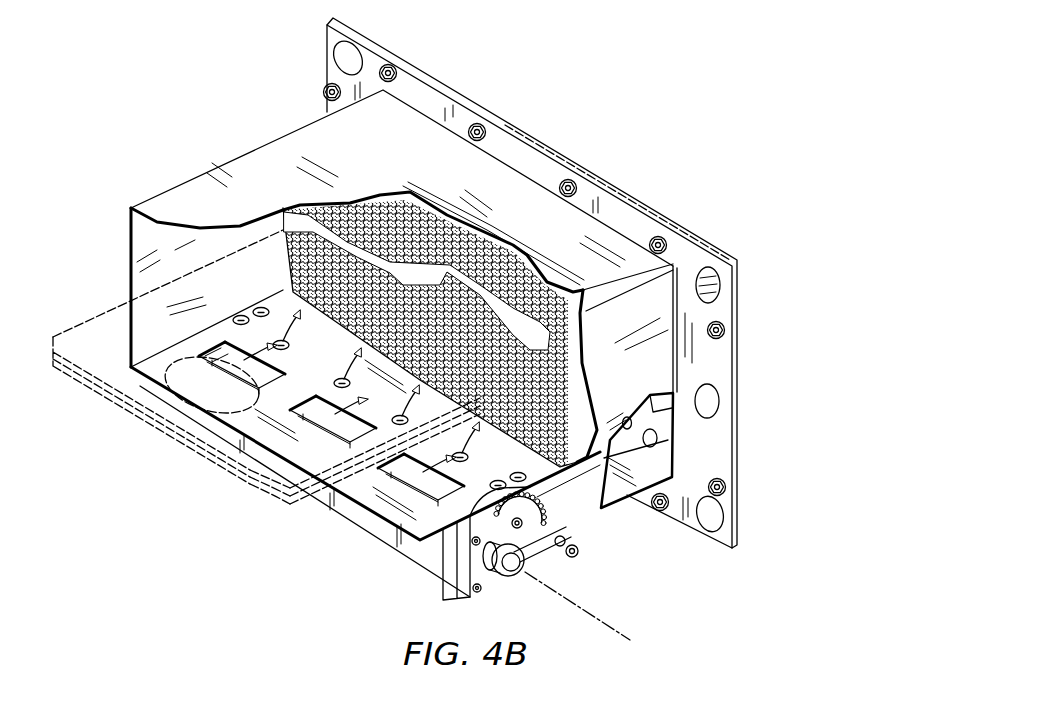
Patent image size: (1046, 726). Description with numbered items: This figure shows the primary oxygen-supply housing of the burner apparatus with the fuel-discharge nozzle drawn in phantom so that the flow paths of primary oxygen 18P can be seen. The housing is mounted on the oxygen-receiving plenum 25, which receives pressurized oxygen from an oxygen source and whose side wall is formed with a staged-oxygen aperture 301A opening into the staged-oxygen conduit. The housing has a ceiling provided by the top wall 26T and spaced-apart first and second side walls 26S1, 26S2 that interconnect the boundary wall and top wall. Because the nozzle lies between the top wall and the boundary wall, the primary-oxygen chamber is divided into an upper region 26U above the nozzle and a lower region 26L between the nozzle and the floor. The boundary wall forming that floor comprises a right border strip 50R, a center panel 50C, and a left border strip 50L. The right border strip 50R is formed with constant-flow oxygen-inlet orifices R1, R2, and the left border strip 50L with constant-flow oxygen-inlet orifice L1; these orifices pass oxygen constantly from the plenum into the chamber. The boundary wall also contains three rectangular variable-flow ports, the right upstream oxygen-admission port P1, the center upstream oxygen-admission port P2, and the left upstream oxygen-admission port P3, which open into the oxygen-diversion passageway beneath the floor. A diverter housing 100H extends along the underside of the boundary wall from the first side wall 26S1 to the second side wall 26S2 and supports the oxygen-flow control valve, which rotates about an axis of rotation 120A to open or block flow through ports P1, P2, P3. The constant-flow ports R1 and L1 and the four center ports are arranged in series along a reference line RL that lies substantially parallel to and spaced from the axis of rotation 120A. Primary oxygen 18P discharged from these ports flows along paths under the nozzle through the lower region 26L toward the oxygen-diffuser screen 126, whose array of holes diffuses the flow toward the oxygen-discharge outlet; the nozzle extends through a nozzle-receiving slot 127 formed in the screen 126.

The oxygen-receiving plenum 25 is at (630, 487).
The top wall 26T is at (268, 140).
The upper region 26U is at (125, 209).
The second side wall 26S2 is at (170, 328).
The first side wall 26S1 is at (660, 362).
The lower region 26L is at (296, 520).
The diverter housing 100H is at (332, 516).
The oxygen-diffuser screen 126 is at (455, 218).
The nozzle-receiving slot 127 is at (445, 281).
The staged-oxygen aperture 301A is at (658, 446).
The constant-flow oxygen-inlet orifice R1 is at (445, 580).
The axis of rotation 120A is at (600, 617).
The constant-flow oxygen-inlet orifice R2 is at (576, 537).
The reference line RL is at (258, 312).
The left border strip 50L is at (125, 380).
The center panel 50C is at (262, 462).
The right border strip 50R is at (405, 490).
The left upstream oxygen-admission port P3 is at (223, 363).
The constant-flow oxygen-inlet orifice L1 is at (216, 340).
The center upstream oxygen-admission port P2 is at (320, 430).
The right upstream oxygen-admission port P1 is at (382, 536).
The primary oxygen 18P is at (262, 308).